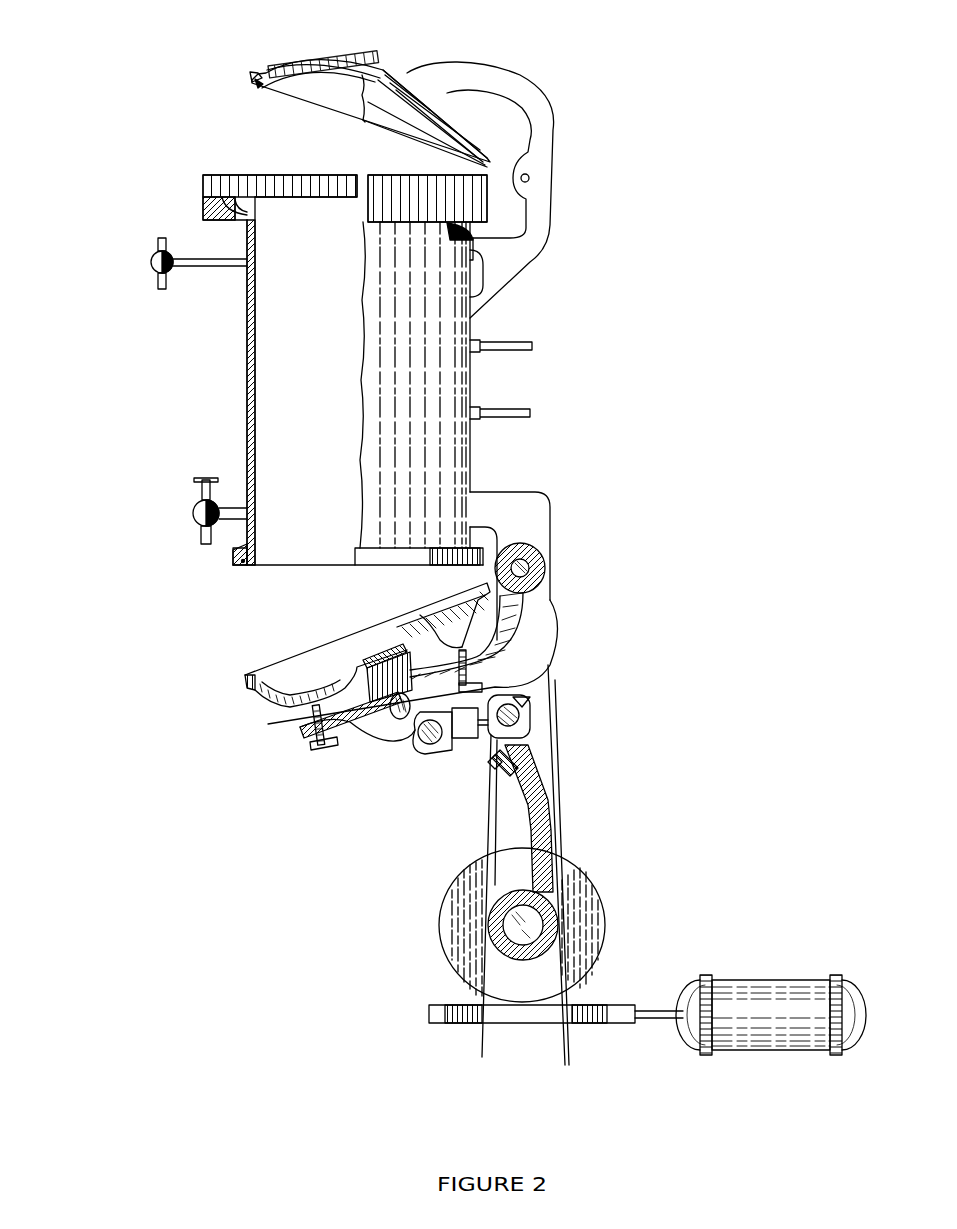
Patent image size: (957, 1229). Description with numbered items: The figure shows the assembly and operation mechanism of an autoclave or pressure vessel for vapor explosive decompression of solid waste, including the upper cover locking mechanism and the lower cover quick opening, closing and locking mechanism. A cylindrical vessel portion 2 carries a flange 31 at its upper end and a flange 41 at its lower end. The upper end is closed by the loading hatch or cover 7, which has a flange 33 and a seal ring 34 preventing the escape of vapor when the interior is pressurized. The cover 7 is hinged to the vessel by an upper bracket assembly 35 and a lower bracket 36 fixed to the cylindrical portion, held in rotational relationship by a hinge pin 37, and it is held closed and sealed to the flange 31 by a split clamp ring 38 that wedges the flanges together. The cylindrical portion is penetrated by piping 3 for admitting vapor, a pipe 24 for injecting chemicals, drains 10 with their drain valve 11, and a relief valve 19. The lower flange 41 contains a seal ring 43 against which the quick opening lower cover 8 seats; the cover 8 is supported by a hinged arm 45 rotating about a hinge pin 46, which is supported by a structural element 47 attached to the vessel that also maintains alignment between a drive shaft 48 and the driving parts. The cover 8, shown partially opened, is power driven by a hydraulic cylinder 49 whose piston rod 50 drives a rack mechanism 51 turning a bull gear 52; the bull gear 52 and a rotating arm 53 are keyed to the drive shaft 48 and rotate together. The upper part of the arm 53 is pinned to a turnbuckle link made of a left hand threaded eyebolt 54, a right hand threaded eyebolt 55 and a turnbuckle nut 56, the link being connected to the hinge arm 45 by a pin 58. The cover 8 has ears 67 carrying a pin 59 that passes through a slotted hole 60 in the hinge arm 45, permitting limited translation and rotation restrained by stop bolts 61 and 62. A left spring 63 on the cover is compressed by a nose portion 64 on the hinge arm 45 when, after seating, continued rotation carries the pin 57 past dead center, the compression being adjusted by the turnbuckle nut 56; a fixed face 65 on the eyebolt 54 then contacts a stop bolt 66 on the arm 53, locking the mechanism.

The cylindrical vessel portion 2 is at (247, 310).
The piping 3 is at (514, 409).
The loading hatch or cover 7 is at (322, 54).
The quick opening hatch or lower cover 8 is at (250, 682).
The drains 10 is at (243, 500).
The drain valve 11 is at (195, 508).
The relief valve 19 is at (150, 262).
The pipe 24 is at (512, 342).
The flange 31 is at (240, 216).
The flange 33 is at (250, 78).
The seal ring 34 is at (261, 87).
The upper bracket assembly 35 is at (548, 112).
The lower bracket 36 is at (541, 216).
The hinge pin 37 is at (531, 178).
The split clamp ring 38 is at (203, 198).
The flange 41 is at (232, 563).
The seal ring 43 is at (245, 568).
The hinged arm 45 is at (563, 620).
The hinge pin 46 is at (532, 568).
The structural element 47 is at (545, 515).
The drive shaft 48 is at (542, 920).
The hydraulic cylinder 49 is at (760, 1048).
The piston rod 50 is at (660, 1025).
The rack mechanism 51 is at (612, 1030).
The bull gear 52 is at (606, 960).
The rotating arm 53 is at (550, 888).
The left hand threaded eyebolt 54 is at (526, 730).
The right hand threaded eyebolt 55 is at (424, 752).
The turnbuckle nut 56 is at (466, 740).
The pin 57 is at (521, 718).
The pin 58 is at (432, 745).
The pin 59 is at (395, 718).
The slotted hole 60 is at (400, 737).
The stop bolt 61 is at (318, 746).
The stop bolt 62 is at (484, 688).
The left spring 63 is at (365, 655).
The nose portion 64 is at (370, 672).
The fixed face 65 is at (531, 699).
The stop bolt 66 is at (496, 770).
The ears 67 is at (330, 704).